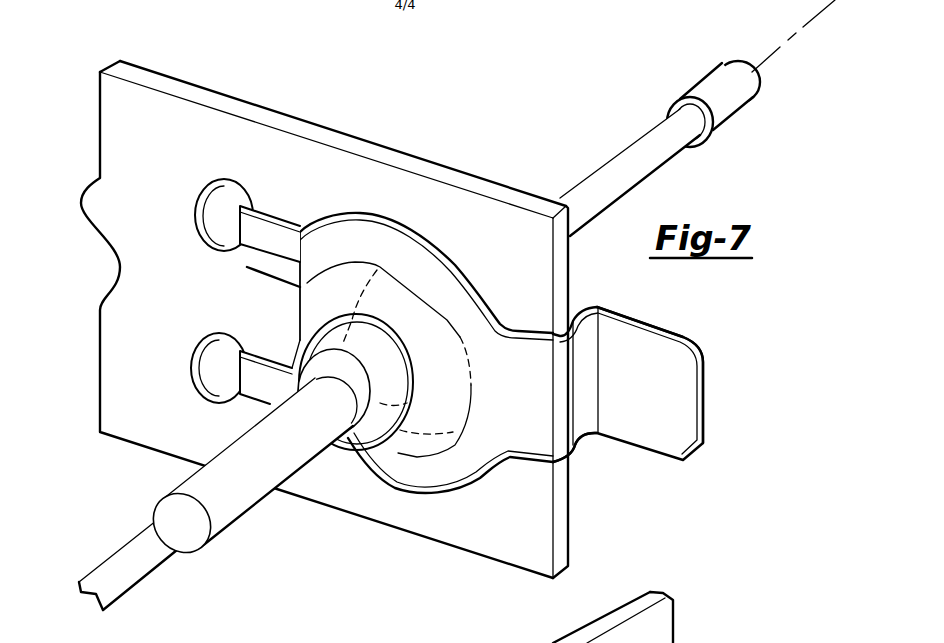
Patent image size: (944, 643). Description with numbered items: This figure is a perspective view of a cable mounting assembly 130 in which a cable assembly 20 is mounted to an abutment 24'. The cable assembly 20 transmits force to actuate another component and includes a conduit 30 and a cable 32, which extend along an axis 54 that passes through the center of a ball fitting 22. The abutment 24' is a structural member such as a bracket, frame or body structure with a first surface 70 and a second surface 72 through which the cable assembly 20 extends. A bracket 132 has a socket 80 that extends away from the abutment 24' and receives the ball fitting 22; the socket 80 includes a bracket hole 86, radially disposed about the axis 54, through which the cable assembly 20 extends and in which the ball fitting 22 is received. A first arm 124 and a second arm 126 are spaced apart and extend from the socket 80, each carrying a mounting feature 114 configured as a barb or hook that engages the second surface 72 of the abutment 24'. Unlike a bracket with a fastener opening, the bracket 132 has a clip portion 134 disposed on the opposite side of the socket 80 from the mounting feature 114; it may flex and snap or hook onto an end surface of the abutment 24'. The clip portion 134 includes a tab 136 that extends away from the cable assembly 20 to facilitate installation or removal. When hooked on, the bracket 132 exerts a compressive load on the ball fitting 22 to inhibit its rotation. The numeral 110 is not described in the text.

The cable assembly 20 is at (233, 472).
The ball fitting 22 is at (357, 437).
The abutment 24' is at (326, 119).
The conduit 30 is at (190, 481).
The cable 32 is at (600, 180).
The axis 54 is at (800, 26).
The first surface 70 is at (112, 98).
The second surface 72 is at (170, 78).
The socket 80 is at (431, 440).
The bracket hole 86 is at (200, 193).
The cable attachment 110 is at (226, 638).
The mounting feature 114 is at (227, 213).
The first arm 124 is at (273, 250).
The second arm 126 is at (268, 377).
The cable mounting assembly 130 is at (619, 276).
The bracket 132 is at (381, 211).
The clip portion 134 is at (601, 448).
The tab 136 is at (660, 360).